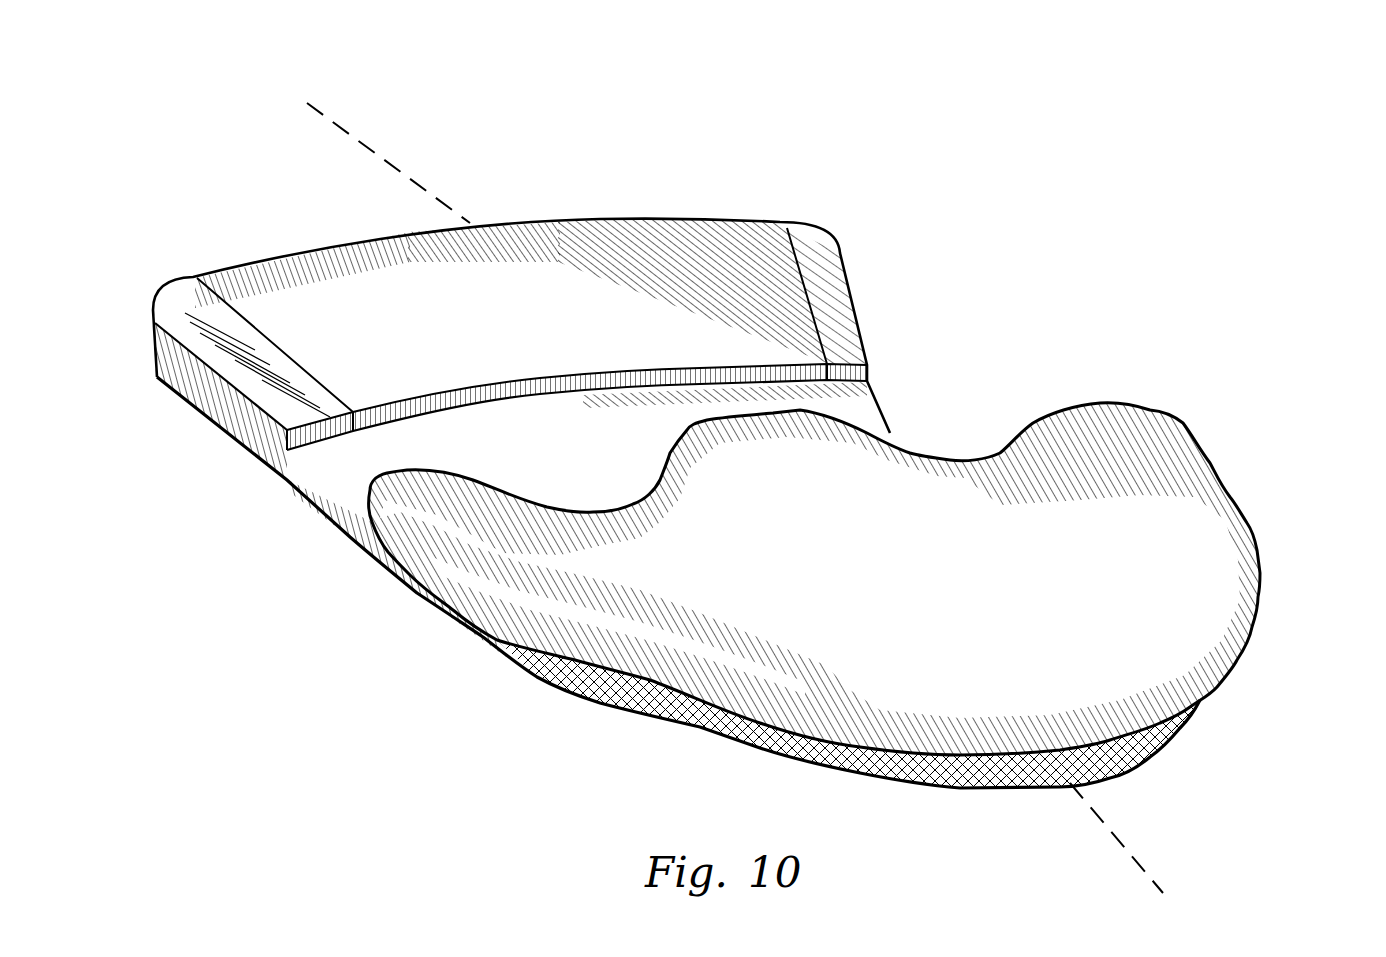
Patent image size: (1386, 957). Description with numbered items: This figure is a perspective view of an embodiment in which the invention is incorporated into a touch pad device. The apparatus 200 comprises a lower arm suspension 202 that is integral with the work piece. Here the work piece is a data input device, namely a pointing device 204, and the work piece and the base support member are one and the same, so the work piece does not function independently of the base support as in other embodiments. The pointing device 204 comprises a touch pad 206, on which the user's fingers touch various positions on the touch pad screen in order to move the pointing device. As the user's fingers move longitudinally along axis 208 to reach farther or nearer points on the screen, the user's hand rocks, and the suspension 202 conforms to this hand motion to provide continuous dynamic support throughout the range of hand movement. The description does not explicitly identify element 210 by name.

The apparatus 200 is at (756, 470).
The lower arm suspension 202 is at (1200, 530).
The pointing device 204 is at (482, 189).
The touch pad 206 is at (413, 275).
The axis 208 is at (1142, 867).
The base panel 210 is at (357, 470).